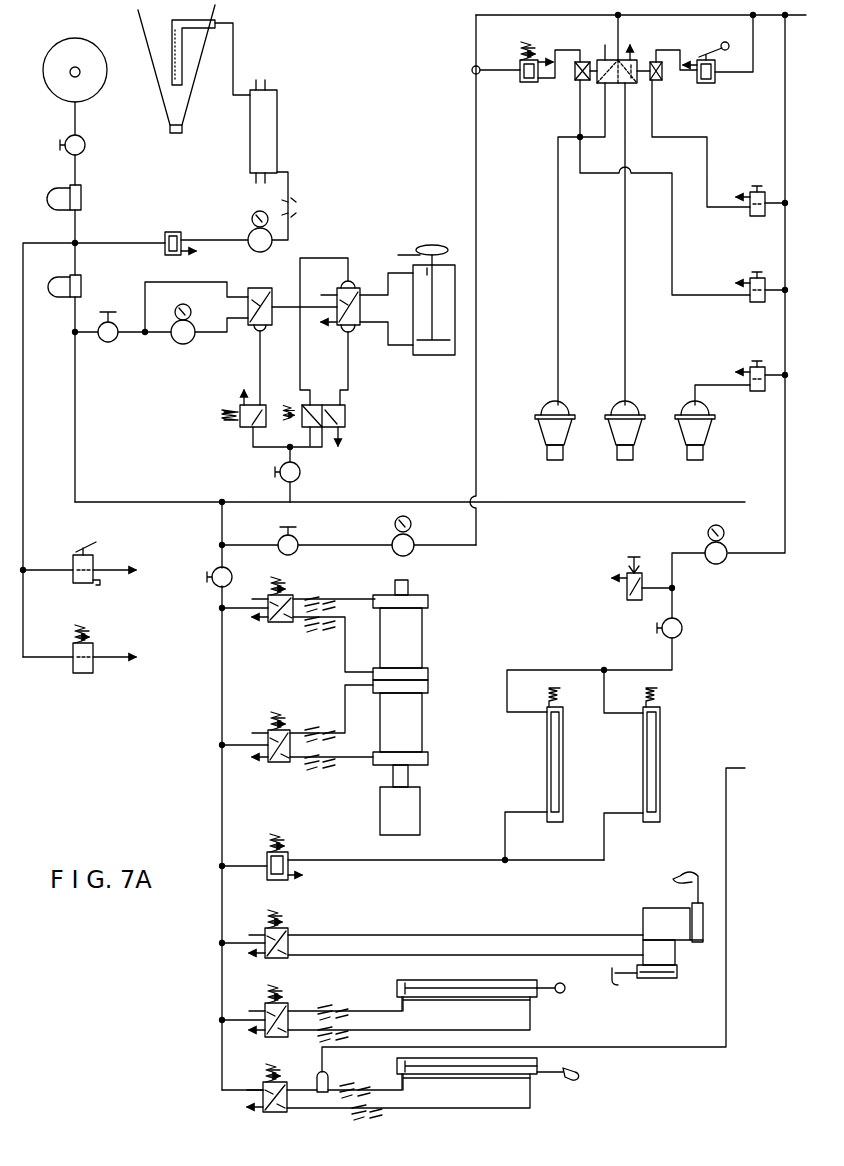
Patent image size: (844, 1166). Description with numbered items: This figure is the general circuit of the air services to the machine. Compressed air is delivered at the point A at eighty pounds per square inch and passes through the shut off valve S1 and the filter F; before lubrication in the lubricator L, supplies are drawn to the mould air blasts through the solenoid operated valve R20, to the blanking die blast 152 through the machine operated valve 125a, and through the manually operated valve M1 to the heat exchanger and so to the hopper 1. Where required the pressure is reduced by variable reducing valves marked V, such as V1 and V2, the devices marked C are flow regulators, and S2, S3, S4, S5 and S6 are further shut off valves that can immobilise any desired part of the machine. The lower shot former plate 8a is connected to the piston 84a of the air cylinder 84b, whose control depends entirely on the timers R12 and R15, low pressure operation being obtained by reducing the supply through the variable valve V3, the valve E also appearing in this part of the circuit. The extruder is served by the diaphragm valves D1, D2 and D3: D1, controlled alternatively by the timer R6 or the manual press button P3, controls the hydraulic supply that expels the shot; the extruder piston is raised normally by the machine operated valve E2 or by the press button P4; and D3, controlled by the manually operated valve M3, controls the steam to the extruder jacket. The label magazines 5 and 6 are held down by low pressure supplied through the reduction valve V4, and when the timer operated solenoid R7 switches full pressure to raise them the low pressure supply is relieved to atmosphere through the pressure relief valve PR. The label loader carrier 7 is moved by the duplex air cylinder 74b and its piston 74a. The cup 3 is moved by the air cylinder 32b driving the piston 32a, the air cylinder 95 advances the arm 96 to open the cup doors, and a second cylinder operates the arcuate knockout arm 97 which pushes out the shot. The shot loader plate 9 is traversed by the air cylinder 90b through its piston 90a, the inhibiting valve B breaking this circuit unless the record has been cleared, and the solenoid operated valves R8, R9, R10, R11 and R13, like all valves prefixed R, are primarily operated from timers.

The hopper 1 is at (144, 33).
The air supply point A is at (80, 74).
The shut off valve S1 is at (90, 146).
The filter F is at (75, 200).
The manually operated valve M1 is at (174, 230).
The variable reducing valve V1 is at (245, 226).
The flow regulator C is at (281, 150).
The lubricator L is at (75, 289).
The shut off valve S2 is at (107, 343).
The variable valve V3 is at (184, 339).
The valve E is at (267, 323).
The timer R15 is at (234, 423).
The timer R12 is at (339, 428).
The shut off valve S3 is at (305, 473).
The lower shot former plate 8a is at (437, 246).
The piston 84a is at (384, 280).
The air cylinder 84b is at (455, 333).
The timer R6 is at (534, 78).
The machine operated valve E2 is at (652, 78).
The manually operated press button P4 is at (750, 188).
The manual press button P3 is at (750, 274).
The manually operated valve M3 is at (748, 362).
The diaphragm valve D1 is at (555, 448).
The diaphragm valve D2 is at (625, 448).
The diaphragm valve D3 is at (695, 448).
The machine operated valve 125a is at (79, 579).
The blanking die blast 152 is at (163, 575).
The solenoid operated valve R20 is at (79, 665).
The shut off valve S4 is at (207, 590).
The shut off valve S5 is at (305, 534).
The variable reducing valve V2 is at (387, 535).
The solenoid operated valve R8 is at (298, 624).
The air cylinder 74b is at (425, 634).
The piston 74a is at (425, 724).
The label loader carrier 7 is at (420, 808).
The solenoid operated valve R9 is at (297, 738).
The timer operated solenoid R7 is at (262, 874).
The solenoid operated valve R10 is at (432, 950).
The solenoid operated valve R11 is at (376, 1026).
The solenoid operated valve R13 is at (366, 1095).
The inhibiting valve B is at (332, 1070).
The air cylinder 32b is at (488, 984).
The piston 32a is at (552, 983).
The cup 3 is at (564, 992).
The air cylinder 90b is at (460, 1076).
The piston 90a is at (546, 1076).
The shot loader plate 9 is at (578, 1077).
The air cylinder 95 is at (677, 944).
The arcuate knockout arm 97 is at (686, 874).
The arm 96 is at (614, 986).
The reduction valve V4 is at (698, 543).
The variable reducing valve V is at (617, 585).
The pressure relief valve PR is at (577, 570).
The shut off valve S6 is at (688, 629).
The label magazine 5 is at (556, 688).
The label magazine 6 is at (651, 688).